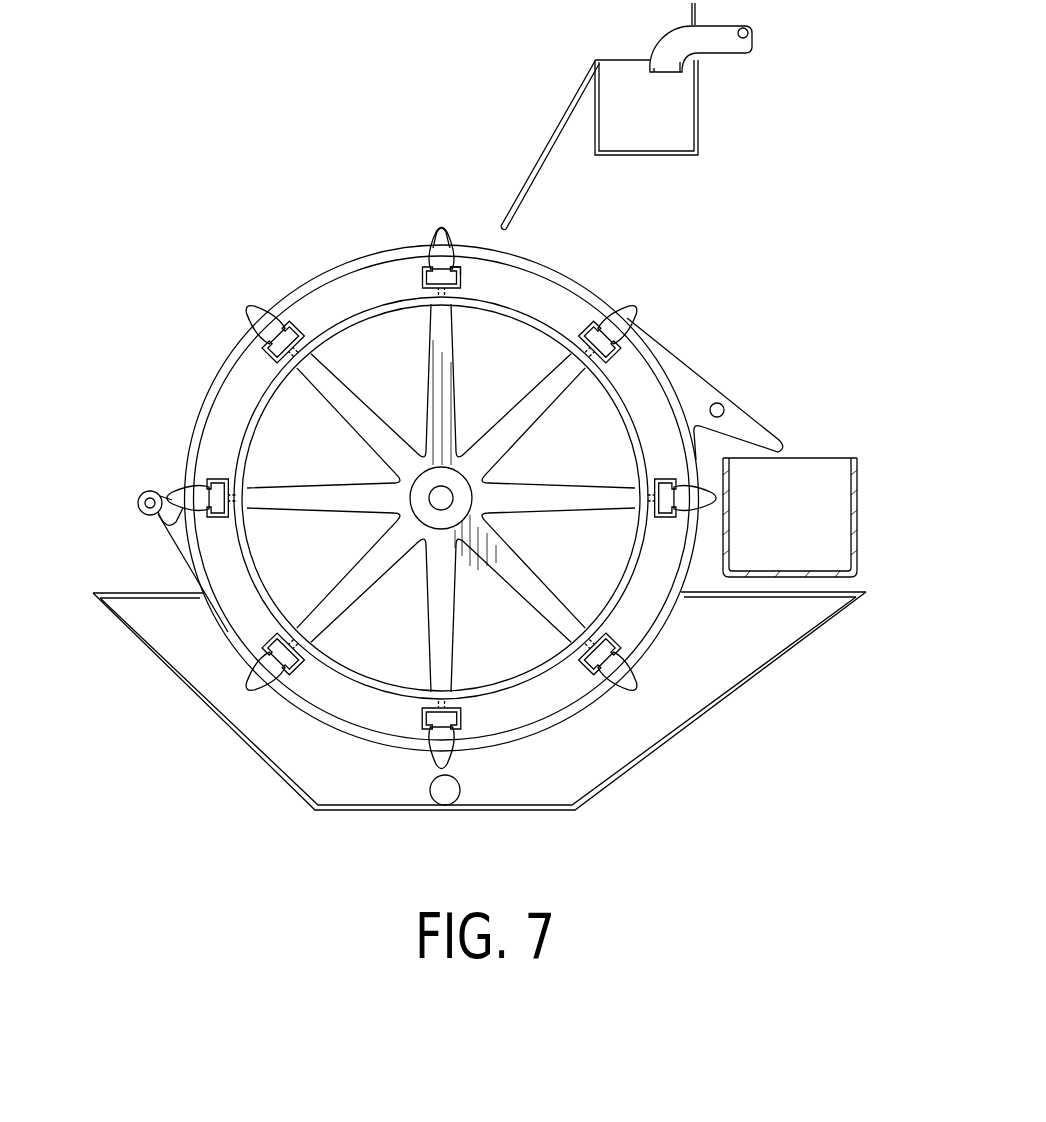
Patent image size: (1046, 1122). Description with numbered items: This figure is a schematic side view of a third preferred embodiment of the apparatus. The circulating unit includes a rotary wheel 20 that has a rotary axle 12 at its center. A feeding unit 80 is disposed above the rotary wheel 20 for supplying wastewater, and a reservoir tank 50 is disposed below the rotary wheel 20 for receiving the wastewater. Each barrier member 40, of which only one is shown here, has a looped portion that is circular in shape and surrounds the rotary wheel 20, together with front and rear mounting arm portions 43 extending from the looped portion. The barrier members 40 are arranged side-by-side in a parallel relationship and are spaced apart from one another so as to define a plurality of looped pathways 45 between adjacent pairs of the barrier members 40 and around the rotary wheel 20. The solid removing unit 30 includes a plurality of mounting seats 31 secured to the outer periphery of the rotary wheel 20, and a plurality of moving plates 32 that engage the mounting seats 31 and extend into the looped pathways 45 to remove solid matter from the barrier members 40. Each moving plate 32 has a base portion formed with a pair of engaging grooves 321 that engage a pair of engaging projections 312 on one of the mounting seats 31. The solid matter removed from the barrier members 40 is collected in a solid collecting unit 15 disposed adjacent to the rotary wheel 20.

The rotary axle 12 is at (443, 500).
The solid collecting unit 15 is at (818, 444).
The rotary wheel 20 is at (390, 463).
The solid removing unit 30 is at (465, 186).
The mounting seat 31 is at (515, 202).
The engaging projection 312 is at (463, 271).
The moving plate 32 is at (403, 173).
The engaging groove 321 is at (427, 250).
The barrier member 40 is at (431, 469).
The mounting arm portion 43 is at (690, 392).
The looped pathway 45 is at (628, 313).
The reservoir tank 50 is at (185, 713).
The feeding unit 80 is at (715, 124).